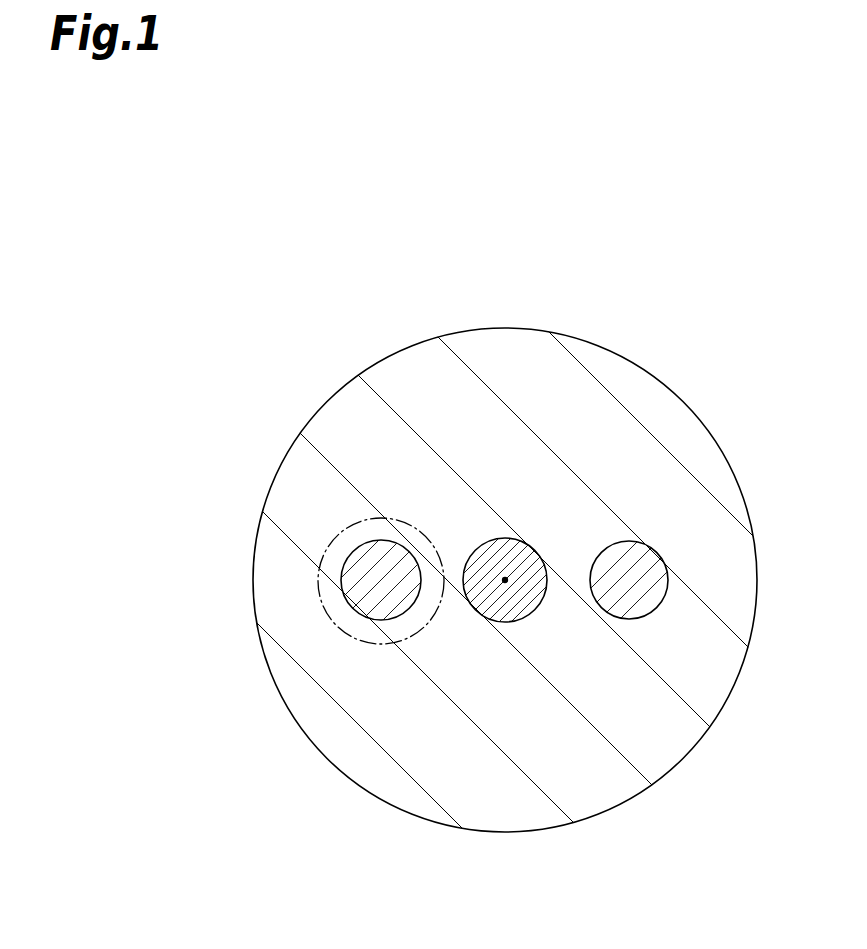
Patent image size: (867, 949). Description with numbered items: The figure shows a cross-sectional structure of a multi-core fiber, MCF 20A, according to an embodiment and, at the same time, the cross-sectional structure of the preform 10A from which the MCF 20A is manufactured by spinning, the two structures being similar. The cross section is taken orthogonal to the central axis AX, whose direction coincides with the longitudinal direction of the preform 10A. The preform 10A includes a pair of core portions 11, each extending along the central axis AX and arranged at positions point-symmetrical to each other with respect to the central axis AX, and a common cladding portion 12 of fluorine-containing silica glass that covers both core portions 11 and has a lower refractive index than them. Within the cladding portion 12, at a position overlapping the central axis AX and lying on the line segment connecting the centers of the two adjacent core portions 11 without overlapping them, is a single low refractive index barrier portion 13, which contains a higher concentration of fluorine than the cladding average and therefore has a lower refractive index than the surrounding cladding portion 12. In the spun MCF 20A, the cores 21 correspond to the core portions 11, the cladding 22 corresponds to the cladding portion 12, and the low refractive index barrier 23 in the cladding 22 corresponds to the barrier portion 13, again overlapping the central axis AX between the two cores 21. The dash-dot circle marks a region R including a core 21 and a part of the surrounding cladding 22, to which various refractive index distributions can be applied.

The preform 10A is at (512, 566).
The MCF 20A is at (665, 383).
The cladding portion 12 is at (500, 580).
The cladding 22 is at (345, 442).
The low refractive index barrier portion 13 is at (433, 474).
The low refractive index barrier 23 is at (492, 540).
The core portion 11 is at (433, 474).
The core 21 is at (612, 615).
The central axis AX is at (505, 580).
The region R is at (332, 547).